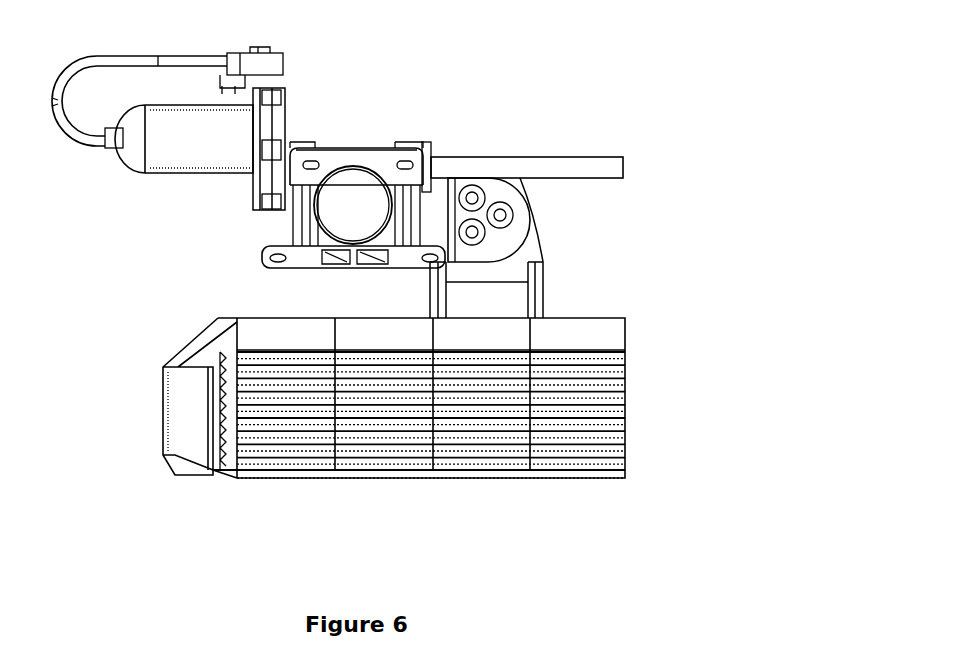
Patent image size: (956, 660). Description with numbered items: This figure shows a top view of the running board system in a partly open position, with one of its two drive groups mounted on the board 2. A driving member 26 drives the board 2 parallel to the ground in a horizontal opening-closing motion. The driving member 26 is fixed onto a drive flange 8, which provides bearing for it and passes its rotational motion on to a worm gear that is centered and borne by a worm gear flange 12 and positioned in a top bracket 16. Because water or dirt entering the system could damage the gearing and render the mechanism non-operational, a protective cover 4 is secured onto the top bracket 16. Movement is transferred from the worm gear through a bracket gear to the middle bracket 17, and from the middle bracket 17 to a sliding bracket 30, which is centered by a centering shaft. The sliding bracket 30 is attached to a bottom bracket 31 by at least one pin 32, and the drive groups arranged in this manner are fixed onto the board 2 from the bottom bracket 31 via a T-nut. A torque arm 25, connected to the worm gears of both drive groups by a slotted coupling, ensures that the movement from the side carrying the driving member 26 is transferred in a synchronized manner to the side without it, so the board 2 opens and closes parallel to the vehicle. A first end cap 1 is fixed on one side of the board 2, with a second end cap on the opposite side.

The first end cap 1 is at (187, 455).
The board 2 is at (480, 472).
The protective cover 4 is at (337, 203).
The drive flange 8 is at (275, 118).
The worm gear flange 12 is at (423, 150).
The top bracket 16 is at (268, 261).
The middle bracket 17 is at (500, 192).
The torque arm 25 is at (577, 165).
The driving member 26 is at (172, 153).
The sliding bracket 30 is at (525, 243).
The bottom bracket 31 is at (450, 305).
The pin 32 is at (548, 283).